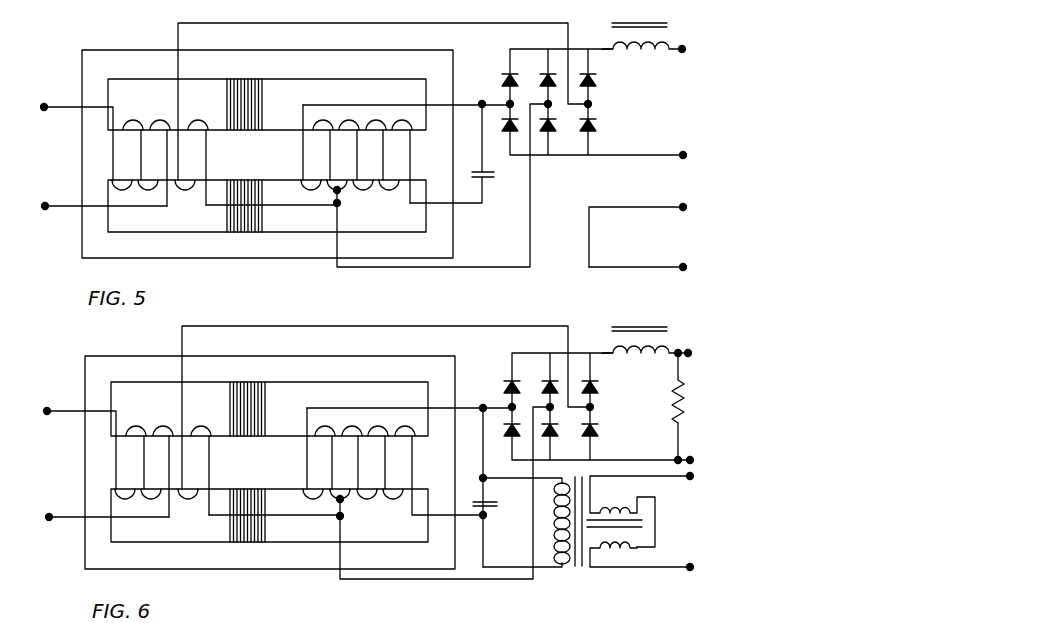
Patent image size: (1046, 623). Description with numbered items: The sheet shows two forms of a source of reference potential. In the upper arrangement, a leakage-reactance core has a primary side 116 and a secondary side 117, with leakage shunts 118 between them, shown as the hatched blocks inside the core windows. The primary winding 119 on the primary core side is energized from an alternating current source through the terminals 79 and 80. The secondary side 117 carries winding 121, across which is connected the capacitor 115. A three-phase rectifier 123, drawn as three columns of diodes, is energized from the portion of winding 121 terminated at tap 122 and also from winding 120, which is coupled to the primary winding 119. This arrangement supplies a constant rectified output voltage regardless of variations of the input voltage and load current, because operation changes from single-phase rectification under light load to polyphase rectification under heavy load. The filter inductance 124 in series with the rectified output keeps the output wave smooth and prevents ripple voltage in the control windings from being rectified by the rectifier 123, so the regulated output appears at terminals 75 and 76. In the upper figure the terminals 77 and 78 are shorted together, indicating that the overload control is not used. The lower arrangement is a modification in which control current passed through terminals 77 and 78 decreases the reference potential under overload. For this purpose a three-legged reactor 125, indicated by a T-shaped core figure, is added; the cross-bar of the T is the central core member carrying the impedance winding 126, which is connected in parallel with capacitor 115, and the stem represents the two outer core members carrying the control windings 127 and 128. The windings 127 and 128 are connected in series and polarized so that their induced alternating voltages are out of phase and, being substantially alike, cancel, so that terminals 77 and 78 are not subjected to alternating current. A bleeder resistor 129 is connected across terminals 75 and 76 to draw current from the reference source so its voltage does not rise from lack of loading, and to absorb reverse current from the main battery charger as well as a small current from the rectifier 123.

In FIG. 5, the output terminal 75 is at (691, 57).
In FIG. 6, the output terminal 75 is at (696, 344).
In FIG. 5, the output terminal 76 is at (692, 148).
In FIG. 6, the output terminal 76 is at (699, 451).
In FIG. 5, the control terminal 77 is at (648, 228).
In FIG. 6, the control terminal 77 is at (701, 470).
In FIG. 5, the control terminal 78 is at (648, 261).
In FIG. 6, the control terminal 78 is at (701, 560).
In FIG. 5, the input terminal 79 is at (77, 109).
In FIG. 6, the input terminal 79 is at (79, 415).
In FIG. 5, the input terminal 80 is at (105, 198).
In FIG. 6, the input terminal 80 is at (105, 509).
In FIG. 5, the capacitor 115 is at (496, 177).
In FIG. 6, the capacitor 115 is at (497, 503).
In FIG. 5, the primary side of leakage-reactance core 116 is at (82, 157).
In FIG. 6, the primary side of leakage-reactance core 116 is at (85, 470).
In FIG. 5, the secondary side of leakage-reactance core 117 is at (453, 100).
In FIG. 6, the secondary side of leakage-reactance core 117 is at (453, 472).
In FIG. 5, the leakage shunts 118 is at (263, 103).
In FIG. 6, the leakage shunts 118 is at (266, 430).
In FIG. 5, the primary winding 119 is at (160, 125).
In FIG. 6, the primary winding 119 is at (156, 432).
In FIG. 5, the winding 120 is at (186, 190).
In FIG. 6, the winding 120 is at (189, 499).
In FIG. 5, the secondary winding 121 is at (356, 128).
In FIG. 6, the secondary winding 121 is at (356, 429).
In FIG. 5, the tap 122 is at (340, 190).
In FIG. 6, the tap 122 is at (343, 500).
In FIG. 5, the three-phase rectifier 123 is at (537, 50).
In FIG. 6, the three-phase rectifier 123 is at (541, 353).
In FIG. 5, the filter inductance 124 is at (668, 27).
In FIG. 6, the filter inductance 124 is at (663, 318).
In FIG. 6, the three-legged reactor 125 is at (583, 568).
In FIG. 6, the impedance winding 126 is at (566, 566).
In FIG. 6, the control winding 127 is at (601, 485).
In FIG. 6, the control winding 128 is at (617, 543).
In FIG. 6, the bleeder resistor 129 is at (674, 423).